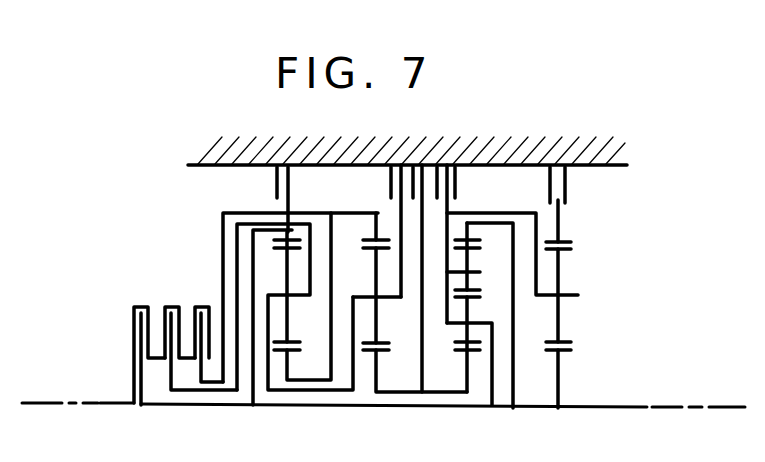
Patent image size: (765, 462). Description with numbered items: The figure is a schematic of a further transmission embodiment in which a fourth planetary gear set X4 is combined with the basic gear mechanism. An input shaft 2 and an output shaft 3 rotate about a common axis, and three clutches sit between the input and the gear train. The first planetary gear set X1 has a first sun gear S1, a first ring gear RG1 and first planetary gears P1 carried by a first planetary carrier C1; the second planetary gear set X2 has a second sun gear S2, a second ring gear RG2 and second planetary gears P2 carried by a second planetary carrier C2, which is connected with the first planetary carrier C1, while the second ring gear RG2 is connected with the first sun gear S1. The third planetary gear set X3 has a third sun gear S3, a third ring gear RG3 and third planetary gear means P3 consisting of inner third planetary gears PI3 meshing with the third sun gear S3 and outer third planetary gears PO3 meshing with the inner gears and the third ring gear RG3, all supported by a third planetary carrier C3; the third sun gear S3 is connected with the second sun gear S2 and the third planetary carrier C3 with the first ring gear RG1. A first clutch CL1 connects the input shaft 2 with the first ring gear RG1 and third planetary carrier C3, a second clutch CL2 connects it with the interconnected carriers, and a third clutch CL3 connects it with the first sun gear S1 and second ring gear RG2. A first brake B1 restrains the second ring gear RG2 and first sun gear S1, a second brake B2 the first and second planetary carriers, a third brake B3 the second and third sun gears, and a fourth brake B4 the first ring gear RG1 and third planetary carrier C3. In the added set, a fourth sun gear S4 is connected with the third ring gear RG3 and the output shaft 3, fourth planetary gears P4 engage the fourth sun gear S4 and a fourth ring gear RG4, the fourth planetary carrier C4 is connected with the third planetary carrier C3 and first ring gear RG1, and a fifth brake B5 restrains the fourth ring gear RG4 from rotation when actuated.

The input shaft 2 is at (123, 406).
The output shaft 3 is at (443, 424).
The first clutch CL1 is at (145, 305).
The second clutch CL2 is at (168, 305).
The third clutch CL3 is at (200, 305).
The first brake B1 is at (276, 183).
The second brake B2 is at (391, 183).
The third brake B3 is at (414, 180).
The fourth brake B4 is at (455, 180).
The fifth brake B5 is at (566, 180).
The first ring gear RG1 is at (284, 232).
The first planetary carrier C1 is at (276, 295).
The first planetary gears P1 is at (287, 318).
The first sun gear S1 is at (287, 362).
The first planetary gear set X1 is at (278, 368).
The second ring gear RG2 is at (374, 225).
The second planetary carrier C2 is at (358, 297).
The second planetary gears P2 is at (378, 318).
The second sun gear S2 is at (377, 370).
The second planetary gear set X2 is at (370, 368).
The third ring gear RG3 is at (478, 228).
The outer third planetary gears PO3 is at (463, 255).
The inner third planetary gears PI3 is at (462, 344).
The third planetary gear means P3 is at (471, 283).
The third planetary carrier C3 is at (486, 312).
The third sun gear S3 is at (467, 372).
The third planetary gear set X3 is at (472, 368).
The fourth ring gear RG4 is at (560, 222).
The fourth planetary carrier C4 is at (572, 295).
The fourth planetary gears P4 is at (562, 330).
The fourth sun gear S4 is at (559, 378).
The fourth planetary gear set X4 is at (553, 376).